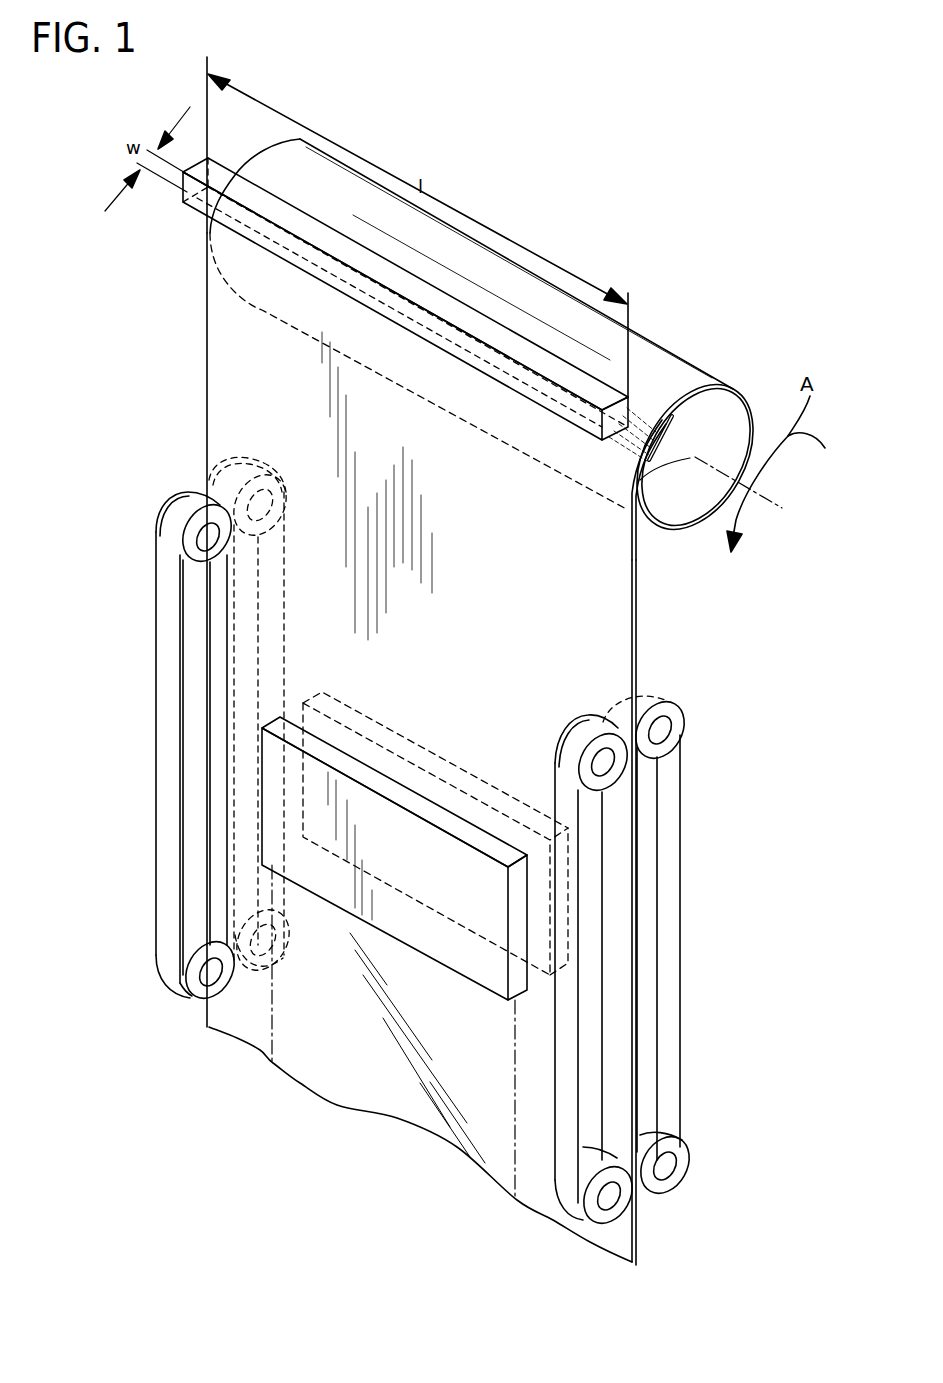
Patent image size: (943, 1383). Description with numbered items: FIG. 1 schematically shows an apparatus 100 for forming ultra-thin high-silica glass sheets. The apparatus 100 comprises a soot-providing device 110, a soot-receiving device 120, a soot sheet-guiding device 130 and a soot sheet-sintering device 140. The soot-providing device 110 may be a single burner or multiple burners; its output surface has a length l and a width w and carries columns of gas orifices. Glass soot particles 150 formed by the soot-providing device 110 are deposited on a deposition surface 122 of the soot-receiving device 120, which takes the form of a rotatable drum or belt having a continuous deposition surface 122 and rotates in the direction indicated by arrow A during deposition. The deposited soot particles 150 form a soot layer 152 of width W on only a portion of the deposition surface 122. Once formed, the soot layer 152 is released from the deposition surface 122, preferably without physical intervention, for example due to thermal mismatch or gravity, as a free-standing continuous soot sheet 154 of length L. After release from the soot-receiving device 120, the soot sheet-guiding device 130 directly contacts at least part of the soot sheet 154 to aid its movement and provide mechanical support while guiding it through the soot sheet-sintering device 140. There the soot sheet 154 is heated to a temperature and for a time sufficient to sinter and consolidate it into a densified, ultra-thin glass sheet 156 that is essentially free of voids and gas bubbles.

The apparatus 100 is at (673, 186).
The soot-providing device 110 is at (237, 223).
The soot-receiving device 120 is at (665, 358).
The deposition surface 122 is at (658, 442).
The soot sheet-guiding device 130 is at (240, 473).
The soot sheet-sintering device 140 is at (468, 783).
The soot particles 150 is at (637, 457).
The soot layer 152 is at (662, 536).
The soot sheet 154 is at (634, 588).
The glass sheet 156 is at (352, 1072).